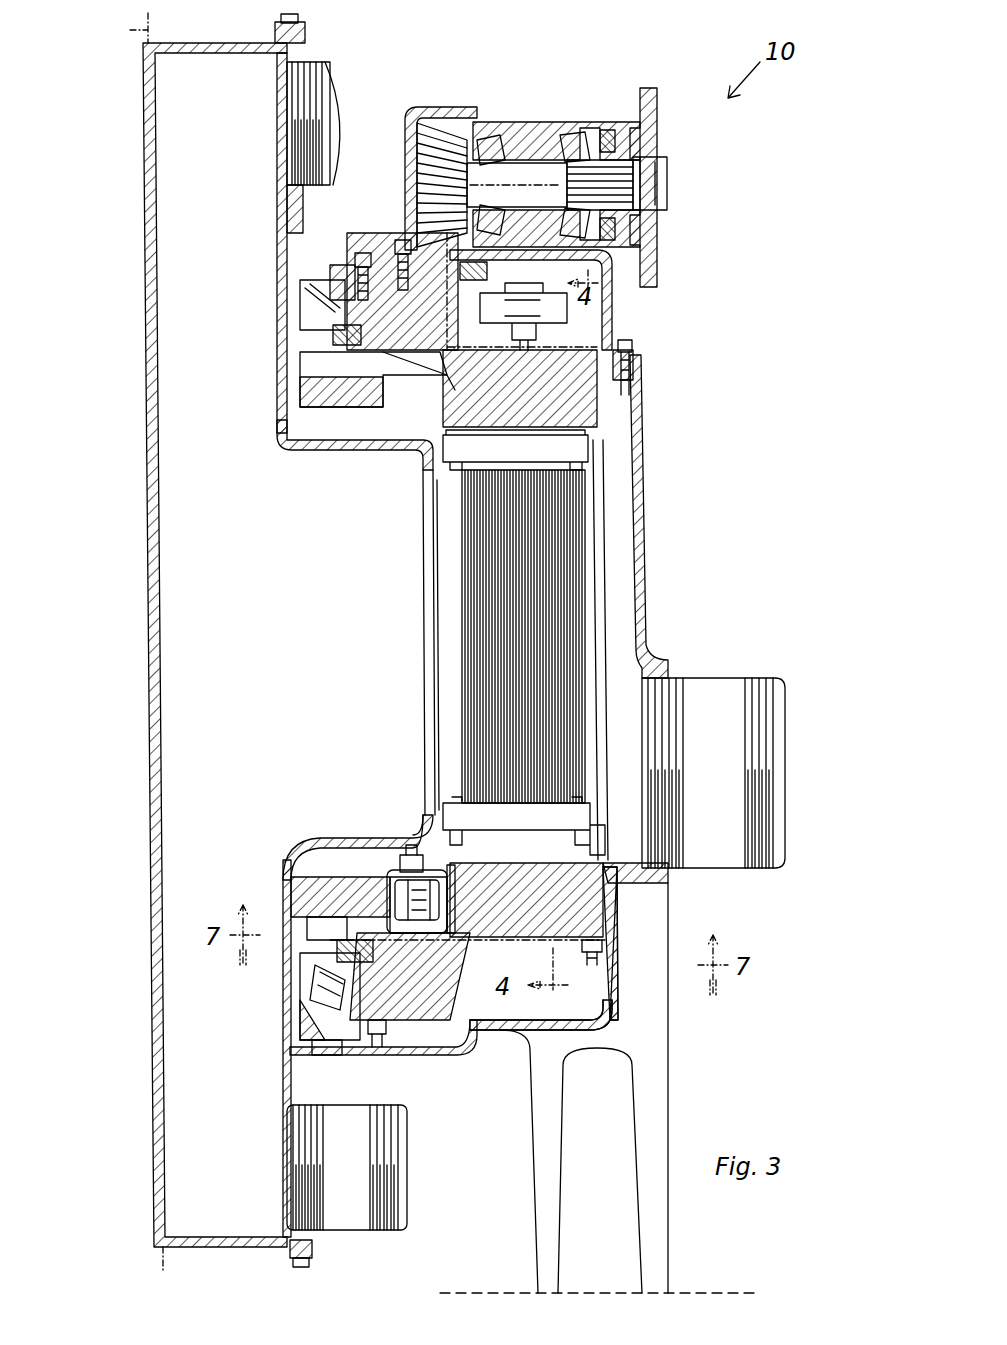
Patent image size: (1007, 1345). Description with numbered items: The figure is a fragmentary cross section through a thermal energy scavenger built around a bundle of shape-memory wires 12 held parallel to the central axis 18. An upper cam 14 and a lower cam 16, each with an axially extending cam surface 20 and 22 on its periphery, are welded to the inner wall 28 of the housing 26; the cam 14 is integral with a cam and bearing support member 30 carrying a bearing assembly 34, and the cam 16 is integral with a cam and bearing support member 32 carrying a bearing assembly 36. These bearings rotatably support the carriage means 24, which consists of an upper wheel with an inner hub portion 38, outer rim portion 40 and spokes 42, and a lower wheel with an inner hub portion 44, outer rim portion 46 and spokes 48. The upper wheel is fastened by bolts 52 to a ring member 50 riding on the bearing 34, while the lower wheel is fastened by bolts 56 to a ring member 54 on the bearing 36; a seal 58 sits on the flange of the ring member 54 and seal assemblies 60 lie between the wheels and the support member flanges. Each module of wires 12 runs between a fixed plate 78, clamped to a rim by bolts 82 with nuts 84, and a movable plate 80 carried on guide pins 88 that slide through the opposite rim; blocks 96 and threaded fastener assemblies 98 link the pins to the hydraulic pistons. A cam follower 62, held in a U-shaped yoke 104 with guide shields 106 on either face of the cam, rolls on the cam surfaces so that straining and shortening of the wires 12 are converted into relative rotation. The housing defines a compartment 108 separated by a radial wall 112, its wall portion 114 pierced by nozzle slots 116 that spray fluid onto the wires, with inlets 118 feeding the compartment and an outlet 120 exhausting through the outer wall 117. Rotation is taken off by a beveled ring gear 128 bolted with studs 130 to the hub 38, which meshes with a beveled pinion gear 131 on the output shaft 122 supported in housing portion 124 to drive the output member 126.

The wires 12 is at (562, 572).
The upper cam 14 is at (326, 410).
The lower cam 16 is at (330, 880).
The central axis 18 is at (130, 36).
The cam surface 20 is at (392, 452).
The cam surface 22 is at (420, 878).
The carriage means 24 is at (438, 516).
The housing 26 is at (672, 385).
The inner wall 28 is at (277, 258).
The cam and bearing support member 30 is at (300, 357).
The cam and bearing support member 32 is at (300, 960).
The bearing assembly 34 is at (300, 304).
The bearing assembly 36 is at (312, 985).
The inner hub portion 38 is at (405, 380).
The outer rim portion 40 is at (628, 358).
The spokes 42 is at (522, 313).
The inner hub portion 44 is at (470, 1045).
The outer rim portion 46 is at (600, 913).
The spokes 48 is at (480, 945).
The ring member 50 is at (348, 280).
The bolts 52 is at (362, 253).
The ring member 54 is at (300, 1022).
The bolts 56 is at (378, 1047).
The seal 58 is at (325, 1050).
The seal assemblies 60 is at (345, 945).
The cam follower assembly 62 is at (425, 855).
The fixed plate 78 is at (572, 845).
The movable plate 80 is at (590, 448).
The bolts 82 is at (452, 830).
The nuts 84 is at (598, 950).
The guide pins 88 is at (625, 315).
The blocks 96 is at (523, 333).
The threaded fastener assemblies 98 is at (570, 262).
The U-shaped yoke 104 is at (440, 900).
The guide shields 106 is at (395, 880).
The first compartment 108 is at (312, 660).
The wall 112 is at (150, 606).
The outwardly disposed portion 114 is at (433, 598).
The nozzle slots 116 is at (423, 565).
The outer wall 117 is at (650, 615).
The inlets 118 is at (325, 70).
The outlet 120 is at (730, 678).
The output shaft 122 is at (528, 163).
The housing portion 124 is at (588, 122).
The output member 126 is at (650, 88).
The beveled ring gear 128 is at (410, 235).
The studs 130 is at (402, 291).
The beveled pinion gear 131 is at (445, 122).